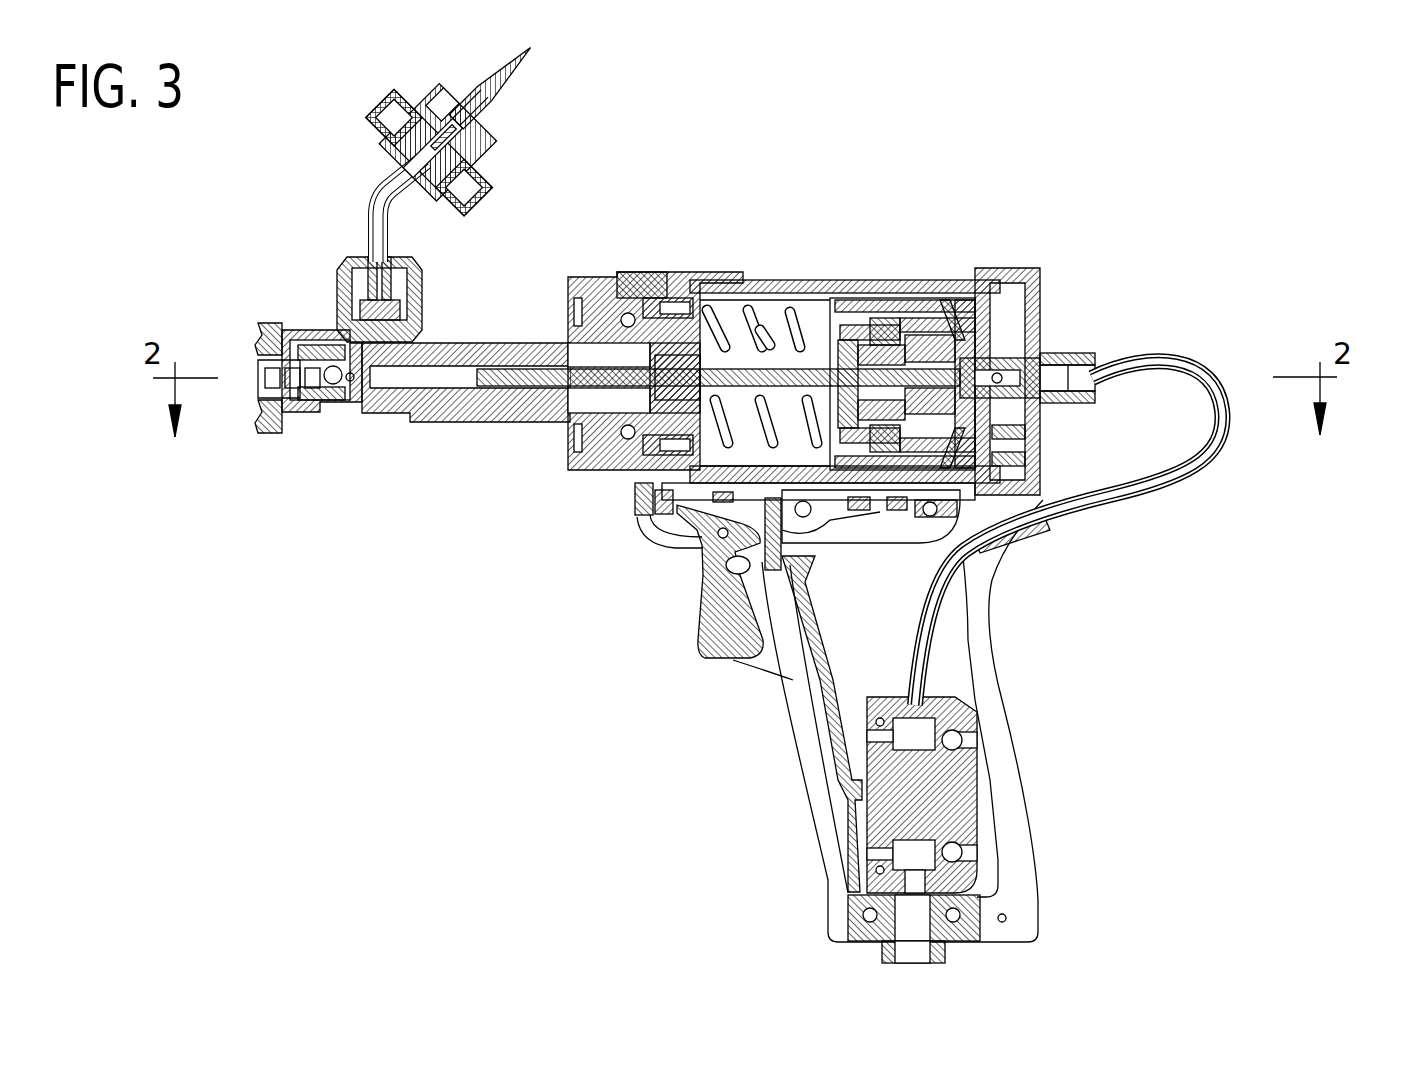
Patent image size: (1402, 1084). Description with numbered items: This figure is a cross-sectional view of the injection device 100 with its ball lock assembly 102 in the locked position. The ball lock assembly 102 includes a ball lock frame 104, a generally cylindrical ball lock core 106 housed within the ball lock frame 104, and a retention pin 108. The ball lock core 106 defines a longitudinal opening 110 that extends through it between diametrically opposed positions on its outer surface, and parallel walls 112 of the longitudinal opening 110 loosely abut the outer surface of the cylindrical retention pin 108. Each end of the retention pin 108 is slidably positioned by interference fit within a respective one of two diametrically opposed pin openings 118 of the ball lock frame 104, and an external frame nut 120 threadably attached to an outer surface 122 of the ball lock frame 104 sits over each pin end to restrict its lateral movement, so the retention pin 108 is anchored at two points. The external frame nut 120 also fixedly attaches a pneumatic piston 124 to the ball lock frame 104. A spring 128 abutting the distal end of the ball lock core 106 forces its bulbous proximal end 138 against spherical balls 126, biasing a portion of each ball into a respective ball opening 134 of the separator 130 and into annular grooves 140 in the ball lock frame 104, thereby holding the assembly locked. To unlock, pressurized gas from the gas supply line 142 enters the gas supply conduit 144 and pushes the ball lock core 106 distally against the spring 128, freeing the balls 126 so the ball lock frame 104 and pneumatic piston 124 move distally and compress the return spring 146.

The injection device 100 is at (466, 640).
The ball lock assembly 102 is at (1010, 350).
The ball lock frame 104 is at (1043, 505).
The ball lock core 106 is at (955, 285).
The retention pin 108 is at (790, 330).
The longitudinal opening 110 is at (893, 350).
The parallel walls 112 is at (897, 470).
The pin openings 118 is at (830, 340).
The external frame nut 120 is at (848, 400).
The outer surface 122 is at (920, 370).
The pneumatic piston 124 is at (935, 320).
The spherical balls 126 is at (1010, 460).
The spring 128 is at (768, 345).
The separator 130 is at (1045, 520).
The ball openings 134 is at (1005, 436).
The proximal end 138 is at (985, 518).
The annular grooves 140 is at (1050, 398).
The gas supply line 142 is at (1173, 483).
The gas supply conduit 144 is at (1012, 375).
The return spring 146 is at (650, 503).